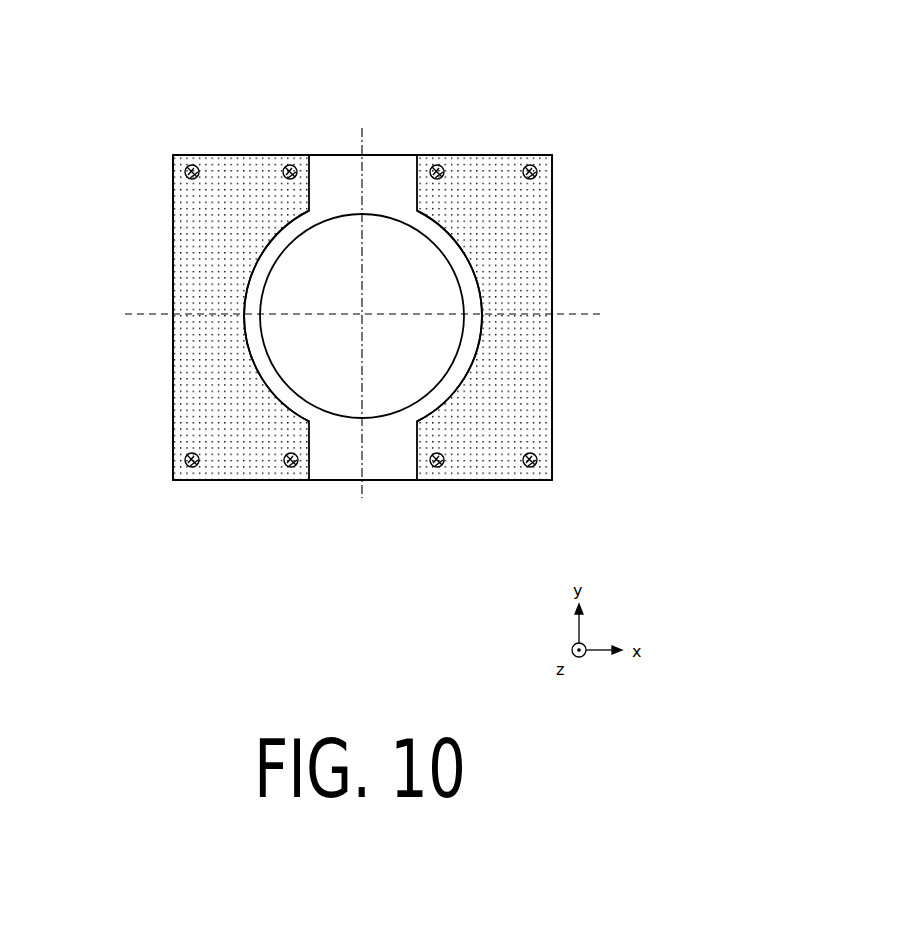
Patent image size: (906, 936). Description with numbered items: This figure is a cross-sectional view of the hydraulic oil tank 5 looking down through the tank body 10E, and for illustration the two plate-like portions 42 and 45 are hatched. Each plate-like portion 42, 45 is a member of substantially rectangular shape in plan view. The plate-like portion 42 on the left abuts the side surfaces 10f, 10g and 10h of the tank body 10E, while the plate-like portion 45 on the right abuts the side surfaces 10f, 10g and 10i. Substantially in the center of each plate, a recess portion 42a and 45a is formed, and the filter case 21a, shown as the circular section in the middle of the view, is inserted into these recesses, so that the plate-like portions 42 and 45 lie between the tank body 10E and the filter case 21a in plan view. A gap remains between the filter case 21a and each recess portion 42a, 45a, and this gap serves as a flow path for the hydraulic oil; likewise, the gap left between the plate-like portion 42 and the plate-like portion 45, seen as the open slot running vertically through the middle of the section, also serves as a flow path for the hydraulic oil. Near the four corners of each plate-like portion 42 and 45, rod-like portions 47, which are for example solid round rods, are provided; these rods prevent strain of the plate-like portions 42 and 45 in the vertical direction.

The vehicle body 5 is at (580, 27).
The tank body 10E is at (349, 325).
The side surface 10f is at (375, 155).
The side surface 10g is at (395, 482).
The side surface 10h is at (174, 288).
The side surface 10i is at (552, 357).
The filter case 21a is at (283, 250).
The plate-like portion 42 is at (187, 410).
The recess portion 42a is at (247, 352).
The plate-like portion 45 is at (528, 418).
The recess portion 45a is at (467, 352).
The rod-like portion 47 is at (288, 165).